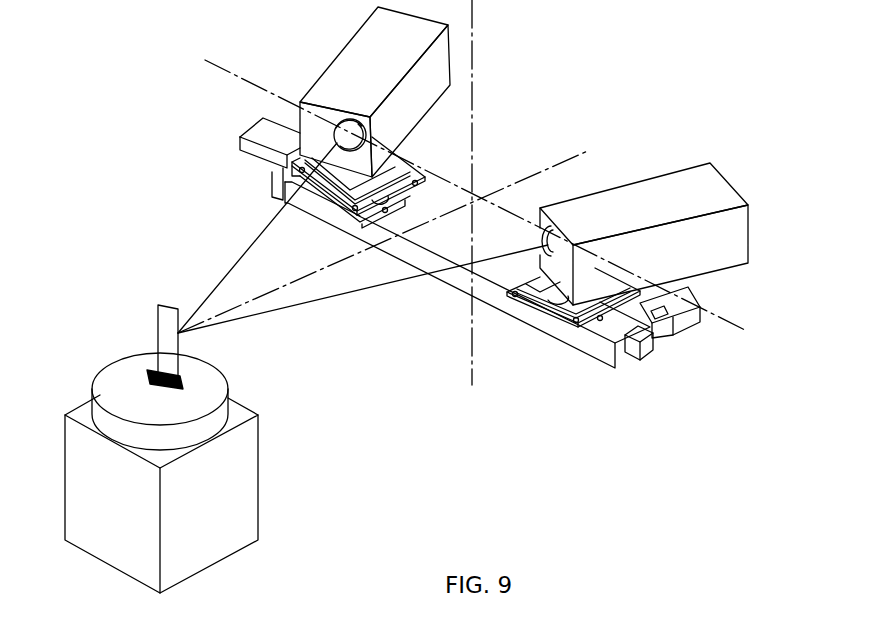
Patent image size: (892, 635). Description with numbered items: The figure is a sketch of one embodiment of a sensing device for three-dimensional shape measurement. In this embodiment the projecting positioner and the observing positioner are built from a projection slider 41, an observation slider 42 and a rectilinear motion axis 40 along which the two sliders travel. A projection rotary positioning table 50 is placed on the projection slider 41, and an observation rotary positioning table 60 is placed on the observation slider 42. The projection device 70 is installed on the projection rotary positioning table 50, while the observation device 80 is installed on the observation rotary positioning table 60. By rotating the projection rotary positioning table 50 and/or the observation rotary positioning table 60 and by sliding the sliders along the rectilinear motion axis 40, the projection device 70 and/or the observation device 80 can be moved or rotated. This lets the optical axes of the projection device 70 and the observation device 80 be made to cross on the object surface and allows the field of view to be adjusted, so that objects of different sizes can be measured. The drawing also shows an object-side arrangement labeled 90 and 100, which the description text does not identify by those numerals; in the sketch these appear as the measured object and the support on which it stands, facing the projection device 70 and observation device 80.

The rectilinear motion axis 40 is at (467, 322).
The projection slider 41 is at (458, 314).
The observation slider 42 is at (662, 373).
The projection rotary positioning table 50 is at (386, 148).
The observation rotary positioning table 60 is at (565, 232).
The projection device 70 is at (424, 92).
The observation device 80 is at (644, 200).
The sample (rod-shaped object) 90 is at (276, 385).
The rotary stage base 100 is at (240, 473).